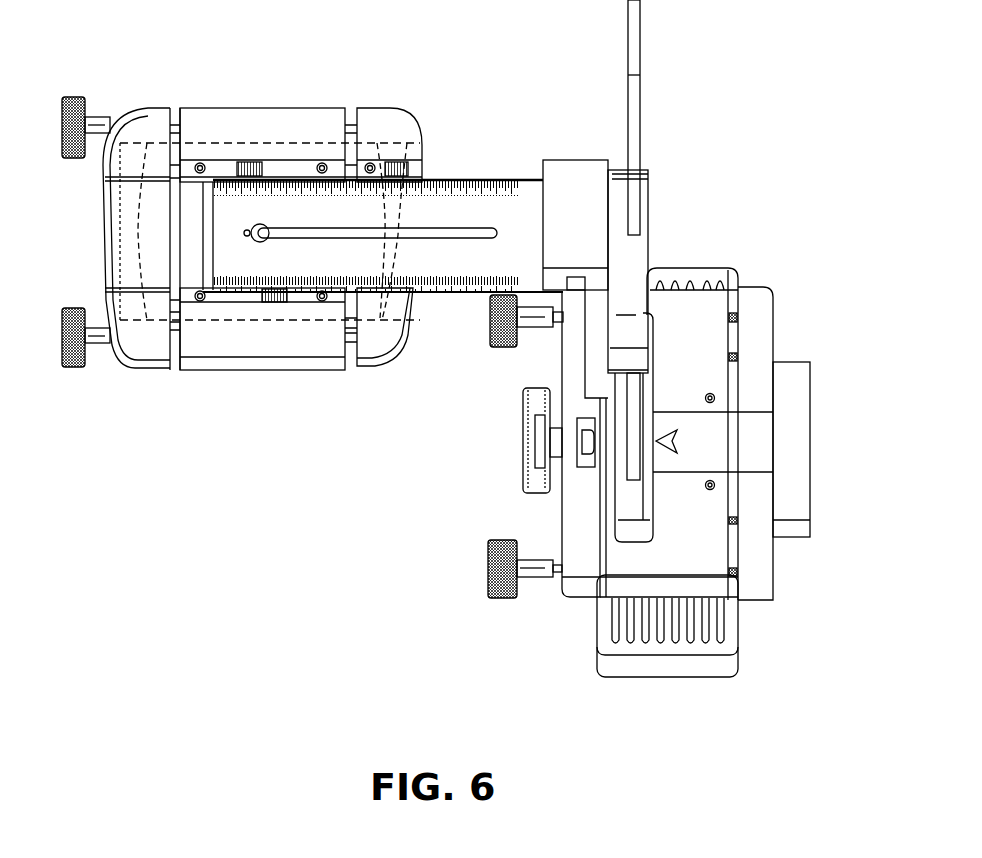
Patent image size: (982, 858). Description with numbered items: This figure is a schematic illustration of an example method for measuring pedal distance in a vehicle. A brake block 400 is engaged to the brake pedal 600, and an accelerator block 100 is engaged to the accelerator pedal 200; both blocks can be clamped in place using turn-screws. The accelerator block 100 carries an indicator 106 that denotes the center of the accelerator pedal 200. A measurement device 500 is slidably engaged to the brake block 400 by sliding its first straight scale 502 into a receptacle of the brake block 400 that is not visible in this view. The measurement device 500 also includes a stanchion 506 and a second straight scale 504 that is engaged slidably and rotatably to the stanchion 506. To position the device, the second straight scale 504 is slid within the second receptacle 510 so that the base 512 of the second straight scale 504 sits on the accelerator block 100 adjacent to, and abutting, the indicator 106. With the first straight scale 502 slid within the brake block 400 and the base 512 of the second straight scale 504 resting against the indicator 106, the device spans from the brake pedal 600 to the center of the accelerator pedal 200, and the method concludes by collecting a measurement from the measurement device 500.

The accelerator block 100 is at (708, 548).
The indicator 106 is at (680, 442).
The accelerator pedal 200 is at (675, 668).
The brake block 400 is at (243, 115).
The measurement device 500 is at (482, 180).
The first straight scale 502 is at (436, 207).
The second straight scale 504 is at (638, 93).
The stanchion 506 is at (565, 178).
The second receptacle 510 is at (650, 178).
The base 512 is at (640, 348).
The brake pedal 600 is at (175, 228).